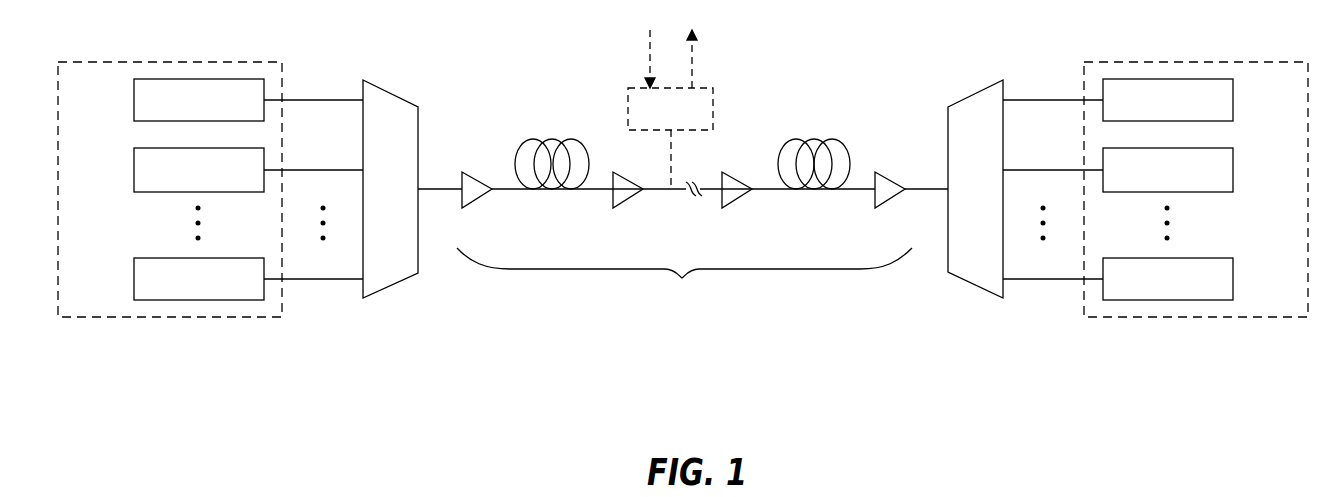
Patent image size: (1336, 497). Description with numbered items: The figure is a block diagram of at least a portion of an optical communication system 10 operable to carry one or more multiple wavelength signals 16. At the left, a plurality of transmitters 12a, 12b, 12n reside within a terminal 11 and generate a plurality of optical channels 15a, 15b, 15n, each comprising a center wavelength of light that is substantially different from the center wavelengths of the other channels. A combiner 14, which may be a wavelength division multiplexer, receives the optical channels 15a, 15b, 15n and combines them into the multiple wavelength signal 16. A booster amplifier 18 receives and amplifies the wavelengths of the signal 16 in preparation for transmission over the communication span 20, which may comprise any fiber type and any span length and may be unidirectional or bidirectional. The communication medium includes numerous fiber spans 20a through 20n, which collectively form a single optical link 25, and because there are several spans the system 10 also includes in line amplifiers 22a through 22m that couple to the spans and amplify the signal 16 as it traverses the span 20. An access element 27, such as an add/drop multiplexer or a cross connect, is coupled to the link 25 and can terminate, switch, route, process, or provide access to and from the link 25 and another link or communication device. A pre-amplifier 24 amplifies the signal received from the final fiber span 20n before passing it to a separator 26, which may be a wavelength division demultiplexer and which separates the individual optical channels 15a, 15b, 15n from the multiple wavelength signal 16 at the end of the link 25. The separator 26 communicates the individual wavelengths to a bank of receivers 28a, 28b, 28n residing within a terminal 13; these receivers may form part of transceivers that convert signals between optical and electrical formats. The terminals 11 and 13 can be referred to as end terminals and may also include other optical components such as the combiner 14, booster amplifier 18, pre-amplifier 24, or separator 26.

The optical communication system 10 is at (452, 67).
The terminal 11 is at (172, 62).
The transmitter 12a is at (134, 100).
The transmitter 12b is at (134, 170).
The transmitter 12n is at (134, 279).
The terminal 13 is at (1196, 62).
The combiner 14 is at (379, 212).
The optical channel 15a is at (345, 98).
The optical channel 15b is at (345, 168).
The optical channel 15n is at (345, 283).
The multiple wavelength signal 16 is at (443, 186).
The booster amplifier 18 is at (478, 205).
The communication span 20 is at (733, 97).
The communication span 20a is at (545, 139).
The communication span 20n is at (812, 139).
The in line amplifier 22a is at (630, 205).
The in line amplifier 22m is at (738, 205).
The pre-amplifier 24 is at (890, 205).
The optical link 25 is at (684, 277).
The separator 26 is at (964, 212).
The access element 27 is at (628, 108).
The receiver 28a is at (1233, 100).
The receiver 28b is at (1233, 170).
The receiver 28n is at (1233, 279).